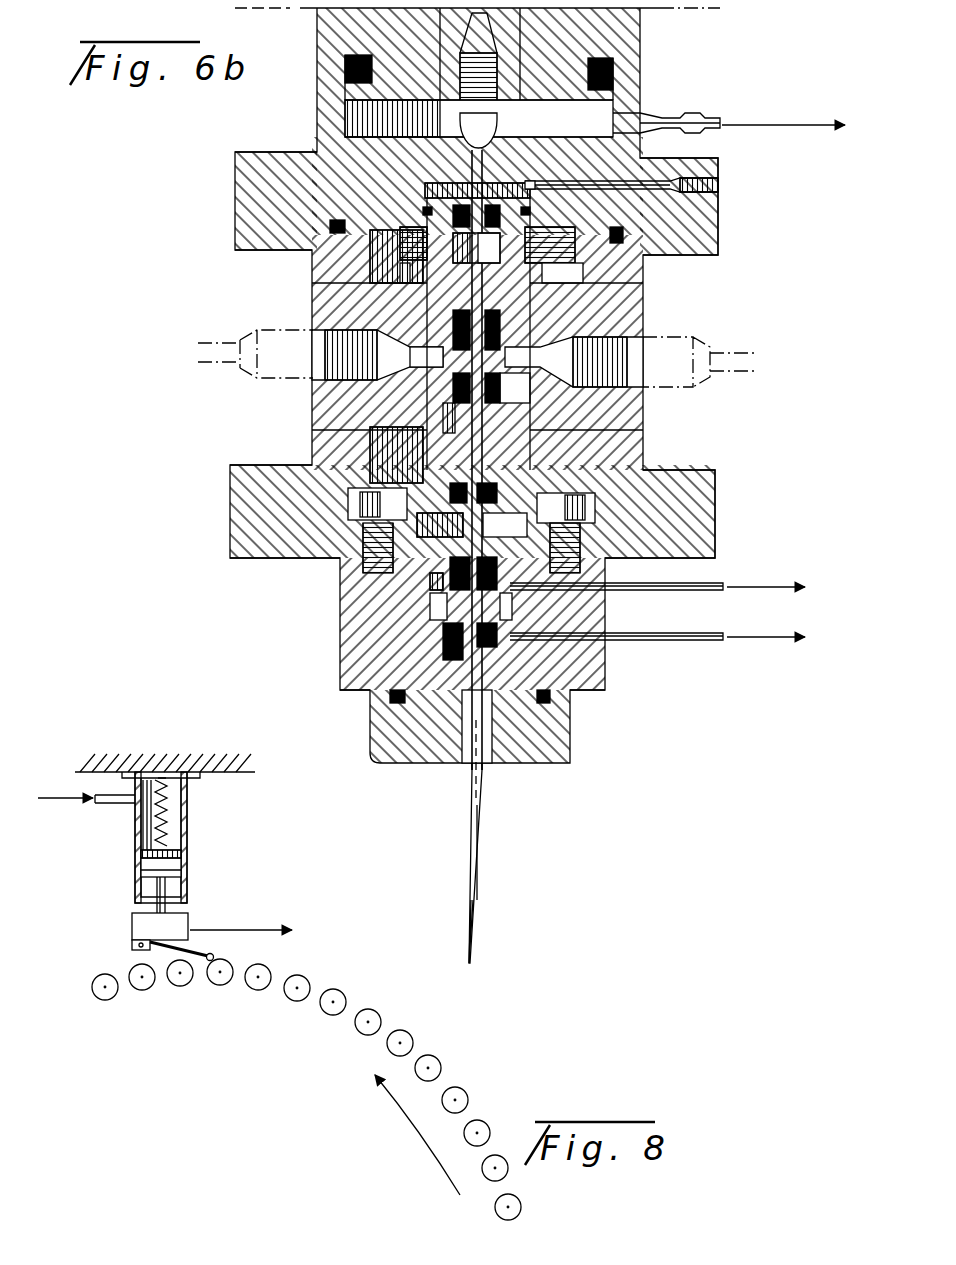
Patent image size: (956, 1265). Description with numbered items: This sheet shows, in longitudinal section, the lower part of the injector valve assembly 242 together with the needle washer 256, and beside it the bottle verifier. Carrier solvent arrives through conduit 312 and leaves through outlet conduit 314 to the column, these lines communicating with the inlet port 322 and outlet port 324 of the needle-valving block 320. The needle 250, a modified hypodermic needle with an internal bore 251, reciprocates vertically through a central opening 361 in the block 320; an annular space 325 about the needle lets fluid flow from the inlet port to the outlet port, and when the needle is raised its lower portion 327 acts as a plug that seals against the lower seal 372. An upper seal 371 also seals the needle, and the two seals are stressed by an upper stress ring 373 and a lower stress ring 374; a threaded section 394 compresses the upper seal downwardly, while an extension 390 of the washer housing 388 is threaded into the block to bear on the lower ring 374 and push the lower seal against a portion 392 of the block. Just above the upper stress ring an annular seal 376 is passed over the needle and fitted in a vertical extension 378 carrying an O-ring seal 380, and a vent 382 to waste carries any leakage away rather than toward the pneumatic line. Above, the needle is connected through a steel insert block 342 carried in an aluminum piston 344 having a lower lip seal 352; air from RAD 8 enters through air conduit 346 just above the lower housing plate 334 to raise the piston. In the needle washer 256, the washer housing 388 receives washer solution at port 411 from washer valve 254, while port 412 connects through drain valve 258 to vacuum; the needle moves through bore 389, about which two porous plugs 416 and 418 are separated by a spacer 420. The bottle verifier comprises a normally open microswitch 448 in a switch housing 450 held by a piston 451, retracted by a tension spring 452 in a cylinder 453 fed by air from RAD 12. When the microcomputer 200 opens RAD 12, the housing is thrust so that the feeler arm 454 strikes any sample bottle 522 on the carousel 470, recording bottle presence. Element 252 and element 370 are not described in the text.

In FIG. 6B, the aluminum piston 344 is at (365, 25).
In FIG. 6B, the lower lip seal 352 is at (613, 63).
In FIG. 6B, the steel insert block 342 is at (450, 75).
In FIG. 6B, the air conduit 346 is at (729, 104).
In FIG. 6B, the RAD 8 is at (779, 123).
In FIG. 6B, the needle 250 is at (482, 163).
In FIG. 6B, the vertical extension 378 is at (447, 187).
In FIG. 6B, the O-ring seal 380 is at (537, 190).
In FIG. 6B, the vent 382 is at (640, 187).
In FIG. 6B, the lower housing plate 334 is at (712, 216).
In FIG. 6B, the injector valve assembly 242 is at (215, 184).
In FIG. 6B, the threaded section 394 is at (397, 240).
In FIG. 6B, the upper seal 371 is at (460, 323).
In FIG. 6B, the upper stress ring 373 is at (500, 310).
In FIG. 6B, the annular seal 376 is at (540, 230).
In FIG. 6B, the body member 370 is at (557, 323).
In FIG. 6B, the outlet port 324 is at (427, 349).
In FIG. 6B, the inlet port 322 is at (505, 350).
In FIG. 6B, the outlet conduit 314 is at (240, 332).
In FIG. 6B, the conduit 312 is at (727, 353).
In FIG. 6B, the portion of block 392 is at (453, 370).
In FIG. 6B, the annular space 325 is at (520, 386).
In FIG. 6B, the central opening 361 is at (505, 395).
In FIG. 6B, the lower seal 372 is at (455, 372).
In FIG. 6B, the lower stress ring 374 is at (463, 417).
In FIG. 6B, the extension 390 is at (597, 450).
In FIG. 6B, the needle-valving block 320 is at (633, 455).
In FIG. 6B, the washer housing 388 is at (232, 541).
In FIG. 6B, the porous plug 416 is at (587, 543).
In FIG. 6B, the porous plug 418 is at (430, 583).
In FIG. 6B, the spacer 420 is at (430, 607).
In FIG. 6B, the port 411 is at (707, 601).
In FIG. 6B, the port 412 is at (707, 651).
In FIG. 6B, the washer valve 254 is at (857, 588).
In FIG. 6B, the drain valve 258 is at (857, 638).
In FIG. 6B, the bore 389 is at (470, 730).
In FIG. 6B, the needle washer 256 is at (628, 697).
In FIG. 6B, the internal bore 251 is at (466, 780).
In FIG. 6B, the needle shaft 252 is at (467, 805).
In FIG. 6B, the lower portion of needle 327 is at (476, 912).
In FIG. 8, the tension spring 452 is at (165, 812).
In FIG. 8, the cylinder 453 is at (178, 826).
In FIG. 8, the piston 451 is at (180, 866).
In FIG. 8, the switch housing 450 is at (135, 913).
In FIG. 8, the microswitch 448 is at (135, 945).
In FIG. 8, the feeler arm 454 is at (180, 960).
In FIG. 8, the sample bottle 522 is at (257, 990).
In FIG. 8, the carousel 470 is at (280, 1045).
In FIG. 8, the microcomputer 200 is at (310, 942).
In FIG. 8, the RAD 12 is at (65, 810).